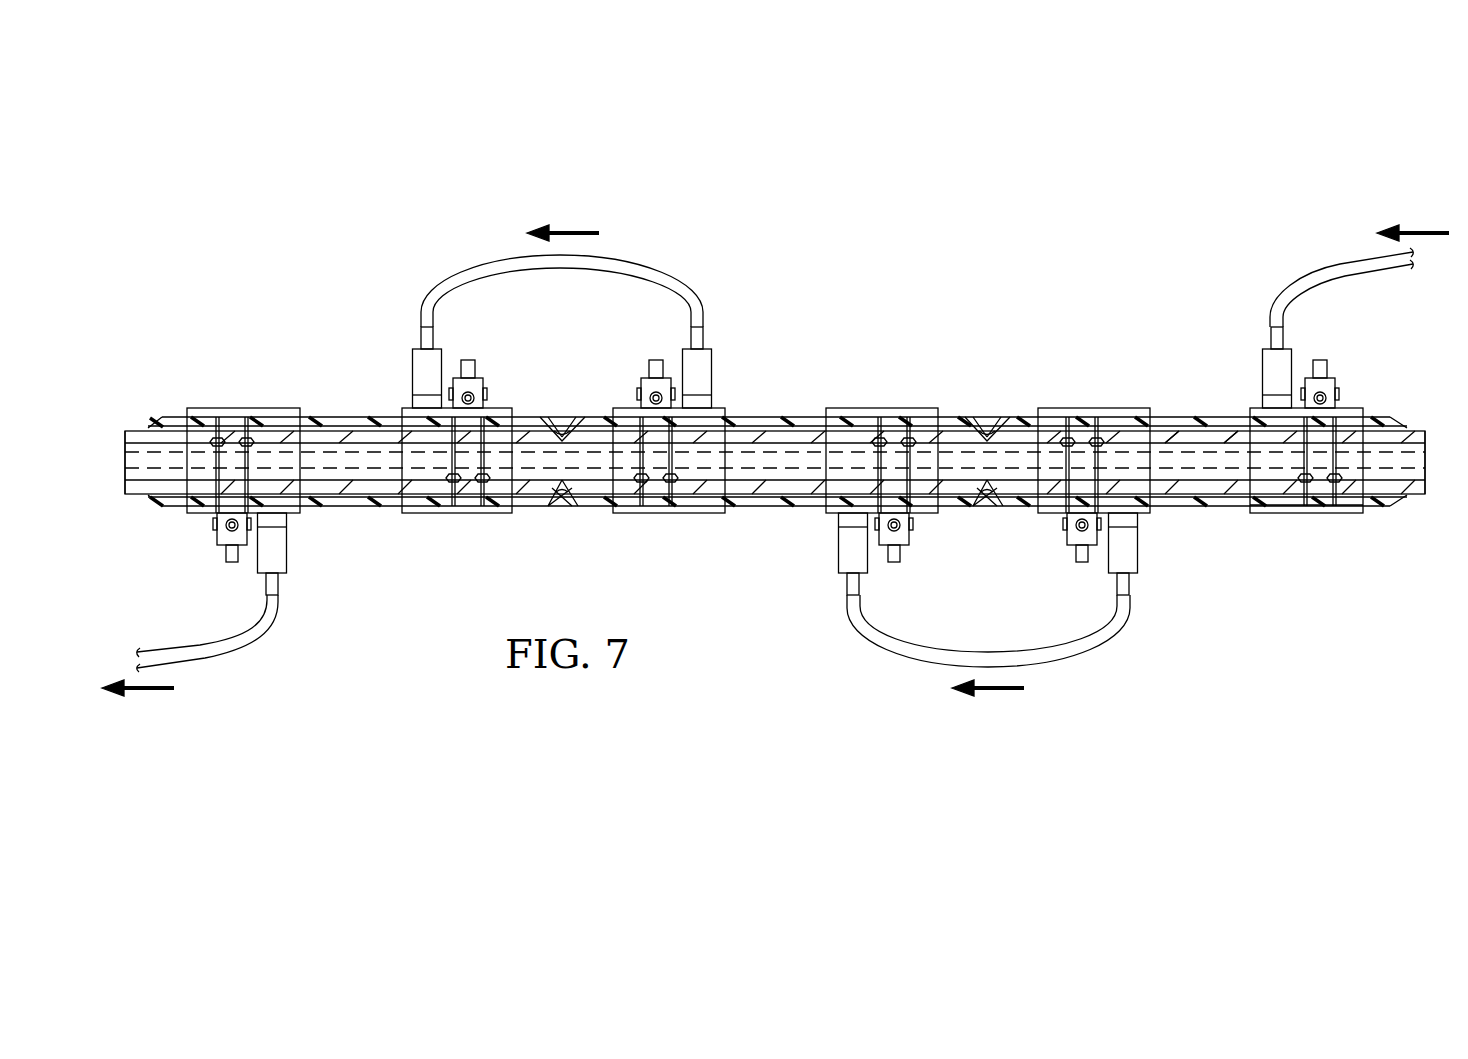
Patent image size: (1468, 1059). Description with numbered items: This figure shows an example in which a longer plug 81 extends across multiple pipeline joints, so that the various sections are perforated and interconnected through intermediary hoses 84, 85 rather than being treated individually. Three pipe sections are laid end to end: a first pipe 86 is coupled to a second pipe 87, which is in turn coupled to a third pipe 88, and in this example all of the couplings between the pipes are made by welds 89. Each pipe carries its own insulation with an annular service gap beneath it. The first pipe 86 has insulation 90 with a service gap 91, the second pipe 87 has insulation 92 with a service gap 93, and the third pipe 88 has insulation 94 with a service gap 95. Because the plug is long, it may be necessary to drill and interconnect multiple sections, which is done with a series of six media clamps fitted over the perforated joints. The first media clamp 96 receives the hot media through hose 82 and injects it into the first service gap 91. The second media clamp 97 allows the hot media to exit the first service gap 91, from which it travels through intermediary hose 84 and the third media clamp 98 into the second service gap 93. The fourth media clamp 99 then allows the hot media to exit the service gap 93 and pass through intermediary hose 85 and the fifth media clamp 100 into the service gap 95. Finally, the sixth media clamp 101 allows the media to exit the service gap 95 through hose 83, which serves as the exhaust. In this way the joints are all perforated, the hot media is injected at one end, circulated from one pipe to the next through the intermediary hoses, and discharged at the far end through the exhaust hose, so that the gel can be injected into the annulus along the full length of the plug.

The plug 81 is at (790, 445).
The hose 82 is at (1315, 282).
The hose 83 is at (235, 640).
The intermediary hose 84 is at (1085, 640).
The intermediary hose 85 is at (465, 282).
The first pipe 86 is at (1412, 488).
The second pipe 87 is at (758, 430).
The third pipe 88 is at (135, 432).
The welds 89 is at (562, 425).
The insulation 90 is at (1375, 420).
The service gap 91 is at (1200, 430).
The insulation 92 is at (955, 495).
The service gap 93 is at (775, 495).
The insulation 94 is at (175, 505).
The service gap 95 is at (350, 425).
The first media clamp 96 is at (1342, 515).
The second media clamp 97 is at (1132, 408).
The third media clamp 98 is at (918, 408).
The fourth media clamp 99 is at (632, 513).
The fifth media clamp 100 is at (420, 513).
The sixth media clamp 101 is at (207, 408).